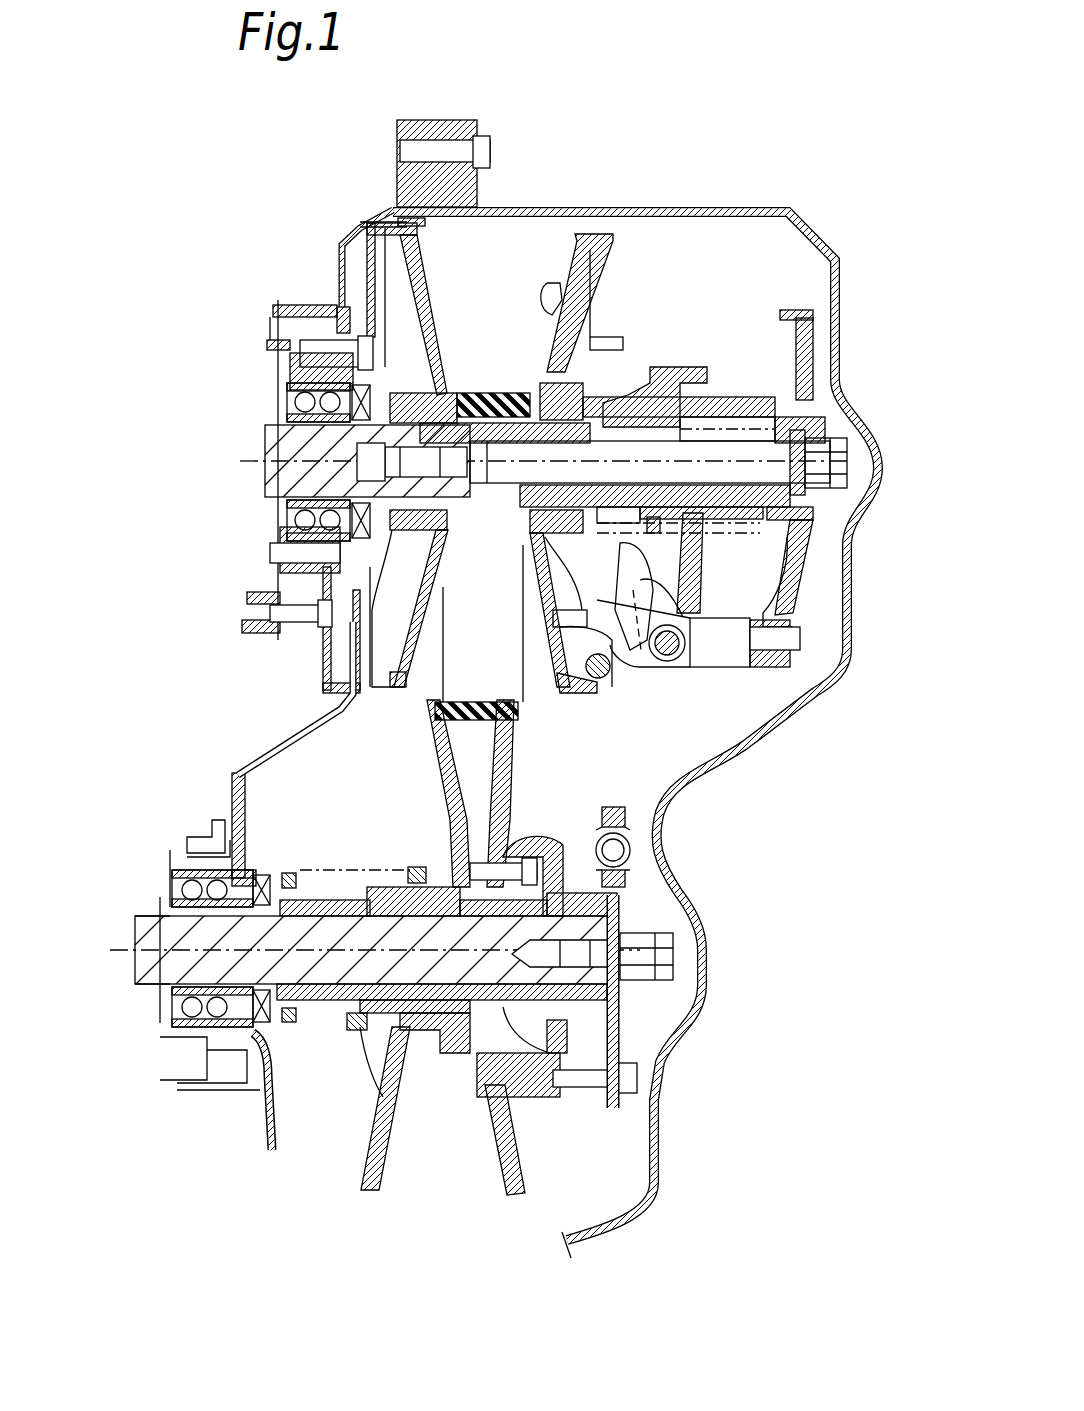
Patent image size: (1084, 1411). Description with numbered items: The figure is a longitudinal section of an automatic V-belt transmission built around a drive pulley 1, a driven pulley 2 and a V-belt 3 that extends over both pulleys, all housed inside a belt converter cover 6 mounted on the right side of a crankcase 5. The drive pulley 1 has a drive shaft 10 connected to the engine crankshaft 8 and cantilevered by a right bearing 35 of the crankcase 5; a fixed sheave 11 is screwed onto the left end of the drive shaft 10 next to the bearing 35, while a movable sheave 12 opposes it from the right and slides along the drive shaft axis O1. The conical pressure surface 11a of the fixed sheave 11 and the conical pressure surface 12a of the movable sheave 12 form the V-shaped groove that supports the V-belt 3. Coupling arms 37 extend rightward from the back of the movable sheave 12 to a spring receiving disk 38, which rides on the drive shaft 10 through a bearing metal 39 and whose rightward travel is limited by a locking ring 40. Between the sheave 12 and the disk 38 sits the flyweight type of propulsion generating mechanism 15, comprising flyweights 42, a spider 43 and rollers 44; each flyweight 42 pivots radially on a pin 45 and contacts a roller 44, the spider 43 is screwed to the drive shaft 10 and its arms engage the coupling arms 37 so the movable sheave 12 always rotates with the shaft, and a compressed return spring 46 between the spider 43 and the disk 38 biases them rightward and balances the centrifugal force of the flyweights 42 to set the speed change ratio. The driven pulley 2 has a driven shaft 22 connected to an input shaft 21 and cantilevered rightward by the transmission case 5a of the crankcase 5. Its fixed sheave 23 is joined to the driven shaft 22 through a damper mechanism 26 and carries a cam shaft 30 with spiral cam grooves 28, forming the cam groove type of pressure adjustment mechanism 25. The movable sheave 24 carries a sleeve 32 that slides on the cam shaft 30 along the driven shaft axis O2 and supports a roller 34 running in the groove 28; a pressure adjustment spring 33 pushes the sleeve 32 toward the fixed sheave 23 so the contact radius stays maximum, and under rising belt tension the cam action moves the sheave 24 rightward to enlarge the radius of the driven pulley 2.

The drive pulley 1 is at (568, 232).
The driven pulley 2 is at (400, 1218).
The V-belt 3 is at (443, 675).
The crankcase 5 is at (262, 633).
The transmission case 5a is at (232, 805).
The belt converter cover 6 is at (752, 210).
The crankshaft 8 is at (275, 443).
The drive shaft 10 is at (497, 393).
The fixed sheave 11 is at (423, 264).
The conical pressure surface 11a is at (410, 302).
The movable sheave 12 is at (592, 277).
The conical pressure surface 12a is at (590, 290).
The flyweight type of propulsion generating mechanism 15 is at (722, 748).
The input shaft 21 is at (143, 953).
The driven shaft 22 is at (356, 932).
The fixed sheave 23 is at (520, 1193).
The movable sheave 24 is at (362, 1190).
The cam groove type of pressure adjustment mechanism 25 is at (345, 800).
The damper mechanism 26 is at (637, 1033).
The spiral-shaped cam grooves 28 is at (430, 1063).
The cam shaft 30 is at (520, 1057).
The sleeve 32 is at (313, 1020).
The pressure adjustment spring 33 is at (297, 873).
The roller 34 is at (450, 893).
The right bearing 35 is at (287, 405).
The coupling arms 37 is at (723, 653).
The spring receiving disk 38 is at (800, 325).
The bearing metal 39 is at (835, 476).
The locking ring 40 is at (820, 513).
The flyweights 42 is at (700, 573).
The spider 43 is at (713, 690).
The rollers 44 is at (657, 668).
The pin 45 is at (600, 680).
The return spring 46 is at (722, 408).
The drive shaft axis O1 is at (272, 458).
The driven shaft axis O2 is at (203, 947).